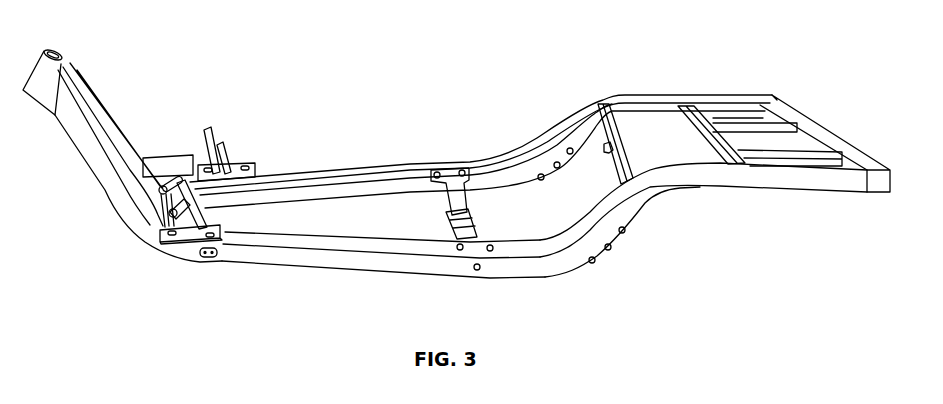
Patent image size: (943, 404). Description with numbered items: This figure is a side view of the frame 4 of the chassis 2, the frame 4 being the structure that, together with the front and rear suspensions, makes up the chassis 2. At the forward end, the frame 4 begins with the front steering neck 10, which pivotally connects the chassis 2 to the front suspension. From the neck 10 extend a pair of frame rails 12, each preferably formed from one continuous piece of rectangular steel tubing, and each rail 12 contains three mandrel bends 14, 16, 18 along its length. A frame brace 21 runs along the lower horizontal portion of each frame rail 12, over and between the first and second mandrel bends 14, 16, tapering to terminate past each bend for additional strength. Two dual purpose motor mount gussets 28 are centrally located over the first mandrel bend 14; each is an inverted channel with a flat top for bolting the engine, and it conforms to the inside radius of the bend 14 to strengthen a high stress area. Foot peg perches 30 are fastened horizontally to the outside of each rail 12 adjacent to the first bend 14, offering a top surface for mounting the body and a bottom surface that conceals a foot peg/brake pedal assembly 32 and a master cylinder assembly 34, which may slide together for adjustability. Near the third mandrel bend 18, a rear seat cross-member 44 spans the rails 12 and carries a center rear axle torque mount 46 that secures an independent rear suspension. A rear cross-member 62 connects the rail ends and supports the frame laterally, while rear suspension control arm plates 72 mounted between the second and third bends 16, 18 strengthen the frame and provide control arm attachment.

The chassis 2 is at (343, 128).
The frame 4 is at (72, 160).
The front steering neck 10 is at (64, 57).
The frame rails 12 is at (357, 249).
The first mandrel bend 14 is at (133, 239).
The second mandrel bend 16 is at (552, 279).
The third mandrel bend 18 is at (600, 103).
The frame brace 21 is at (285, 213).
The motor mount gussets 28 is at (170, 212).
The foot peg perches 30 is at (237, 162).
The foot peg/brake pedal assembly 32 is at (213, 155).
The master cylinder assembly 34 is at (208, 258).
The rear seat cross-member 44 is at (608, 110).
The center rear axle torque mount 46 is at (620, 152).
The rear cross-member 62 is at (815, 118).
The rear suspension control arm plates 72 is at (556, 175).